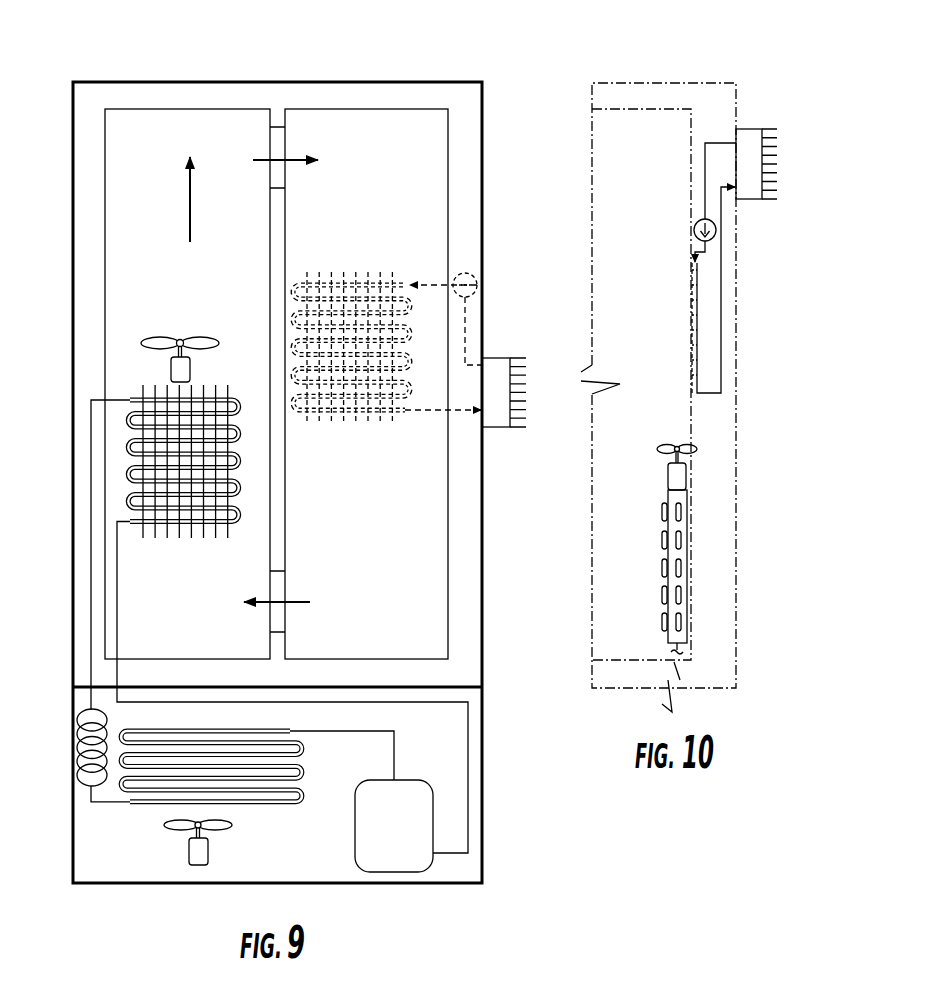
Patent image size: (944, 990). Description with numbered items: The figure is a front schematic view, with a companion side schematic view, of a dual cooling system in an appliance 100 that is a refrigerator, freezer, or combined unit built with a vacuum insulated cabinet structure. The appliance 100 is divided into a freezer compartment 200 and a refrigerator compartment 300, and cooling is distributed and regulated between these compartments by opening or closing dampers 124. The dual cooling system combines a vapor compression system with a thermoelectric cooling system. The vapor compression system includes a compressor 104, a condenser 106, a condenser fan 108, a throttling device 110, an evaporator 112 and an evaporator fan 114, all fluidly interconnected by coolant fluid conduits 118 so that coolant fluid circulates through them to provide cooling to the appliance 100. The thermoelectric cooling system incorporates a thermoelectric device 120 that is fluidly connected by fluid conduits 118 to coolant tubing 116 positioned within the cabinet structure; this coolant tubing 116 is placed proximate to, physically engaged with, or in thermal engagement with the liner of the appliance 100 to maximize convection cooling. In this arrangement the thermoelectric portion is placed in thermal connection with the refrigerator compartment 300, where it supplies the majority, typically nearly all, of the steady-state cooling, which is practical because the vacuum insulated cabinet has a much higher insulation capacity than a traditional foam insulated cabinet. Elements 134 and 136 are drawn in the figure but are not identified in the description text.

In FIG. 9, the appliance 100 is at (189, 69).
In FIG. 9, the freezer compartment 200 is at (127, 196).
In FIG. 9, the refrigerator compartment 300 is at (379, 134).
In FIG. 9, the compressor 104 is at (409, 839).
In FIG. 9, the condenser 106 is at (258, 804).
In FIG. 9, the condenser fan 108 is at (197, 867).
In FIG. 9, the throttling device 110 is at (78, 727).
In FIG. 9, the evaporator 112 is at (126, 441).
In FIG. 10, the evaporator 112 is at (679, 595).
In FIG. 9, the evaporator fan 114 is at (171, 369).
In FIG. 10, the evaporator fan 114 is at (683, 477).
In FIG. 9, the coolant tubing 116 is at (376, 282).
In FIG. 9, the coolant fluid conduits 118 is at (423, 284).
In FIG. 9, the thermoelectric device 120 is at (497, 368).
In FIG. 9, the dampers 124 is at (270, 177).
In FIG. 9, the heat sink 134 is at (522, 429).
In FIG. 10, the heat sink 134 is at (763, 200).
In FIG. 9, the valve 136 is at (478, 283).
In FIG. 10, the valve 136 is at (694, 236).